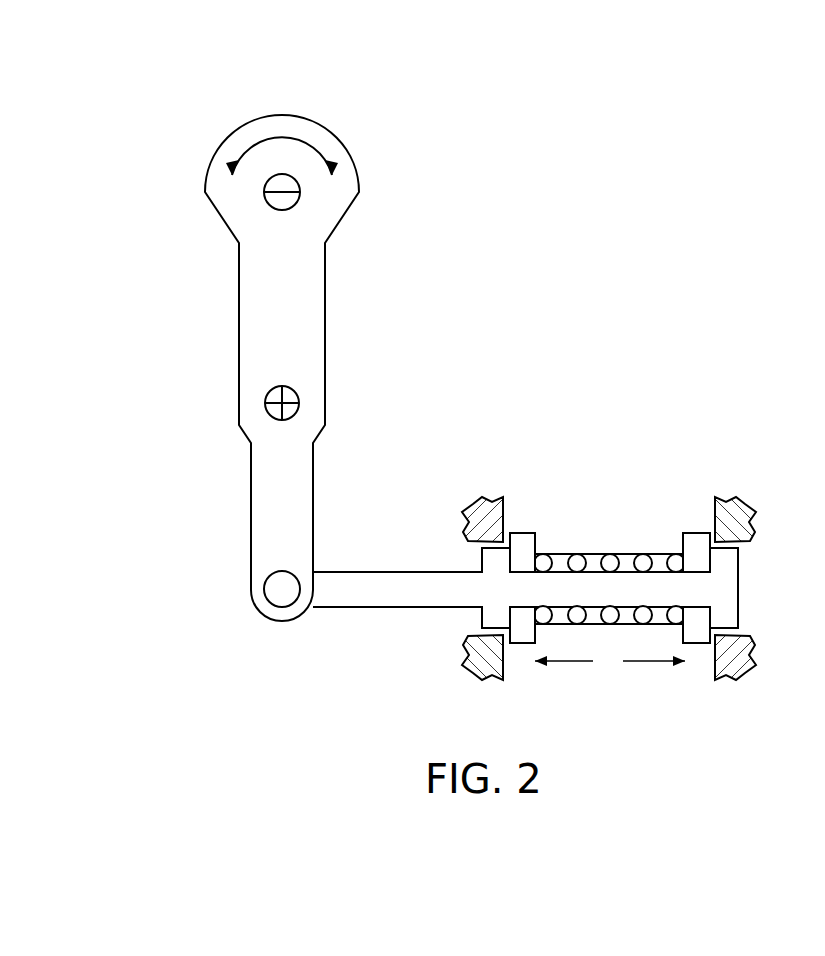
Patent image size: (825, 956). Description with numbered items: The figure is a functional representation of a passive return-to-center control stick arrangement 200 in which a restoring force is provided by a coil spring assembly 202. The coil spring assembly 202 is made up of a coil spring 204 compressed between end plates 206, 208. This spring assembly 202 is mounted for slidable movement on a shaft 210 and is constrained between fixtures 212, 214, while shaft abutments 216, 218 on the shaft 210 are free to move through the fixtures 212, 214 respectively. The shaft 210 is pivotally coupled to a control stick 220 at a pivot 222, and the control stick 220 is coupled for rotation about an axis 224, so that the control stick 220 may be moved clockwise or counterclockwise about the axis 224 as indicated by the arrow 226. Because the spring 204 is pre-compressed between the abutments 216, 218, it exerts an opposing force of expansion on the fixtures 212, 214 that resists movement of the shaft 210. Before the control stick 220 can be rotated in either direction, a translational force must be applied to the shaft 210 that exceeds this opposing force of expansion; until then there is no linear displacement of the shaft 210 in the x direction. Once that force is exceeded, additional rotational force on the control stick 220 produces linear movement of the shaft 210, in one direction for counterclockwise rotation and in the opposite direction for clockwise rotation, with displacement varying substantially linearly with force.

The passive return-to-center control stick arrangement 200 is at (413, 375).
The coil spring assembly 202 is at (567, 581).
The coil spring 204 is at (577, 557).
The end plate 206 is at (522, 638).
The end plate 208 is at (697, 638).
The shaft 210 is at (588, 600).
The fixture 212 is at (472, 520).
The fixture 214 is at (745, 518).
The shaft abutment 216 is at (485, 563).
The shaft abutment 218 is at (733, 563).
The control stick 220 is at (260, 344).
The pivot 222 is at (273, 588).
The axis 224 is at (270, 410).
The arrow 226 is at (280, 140).